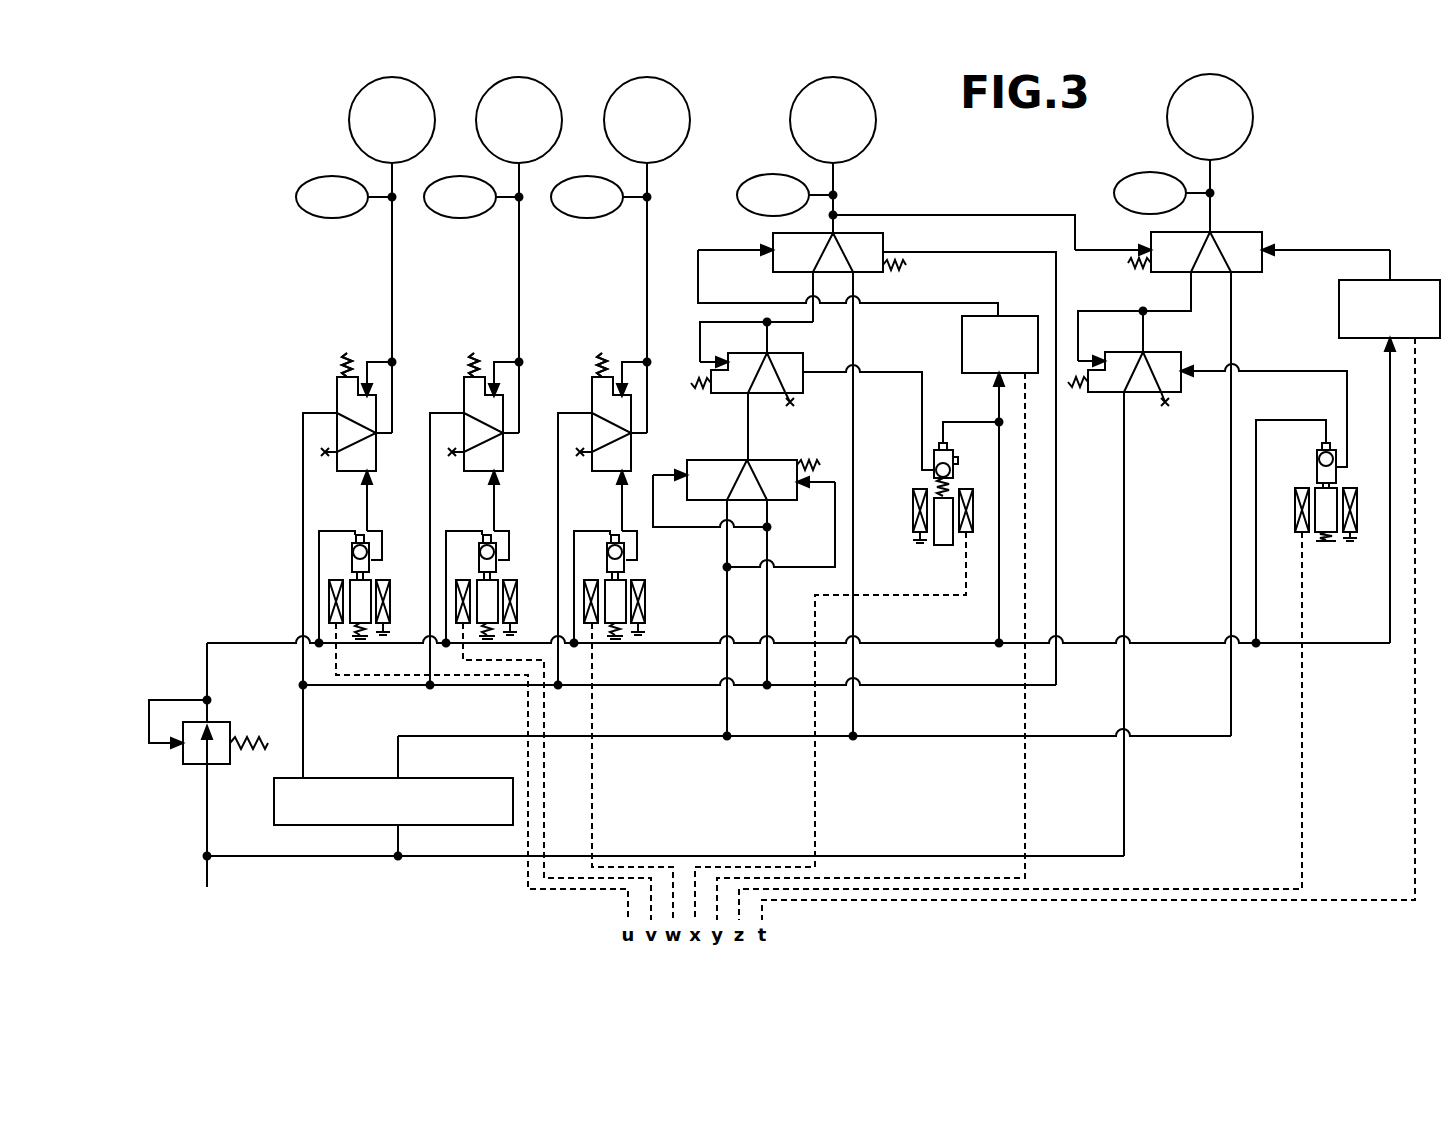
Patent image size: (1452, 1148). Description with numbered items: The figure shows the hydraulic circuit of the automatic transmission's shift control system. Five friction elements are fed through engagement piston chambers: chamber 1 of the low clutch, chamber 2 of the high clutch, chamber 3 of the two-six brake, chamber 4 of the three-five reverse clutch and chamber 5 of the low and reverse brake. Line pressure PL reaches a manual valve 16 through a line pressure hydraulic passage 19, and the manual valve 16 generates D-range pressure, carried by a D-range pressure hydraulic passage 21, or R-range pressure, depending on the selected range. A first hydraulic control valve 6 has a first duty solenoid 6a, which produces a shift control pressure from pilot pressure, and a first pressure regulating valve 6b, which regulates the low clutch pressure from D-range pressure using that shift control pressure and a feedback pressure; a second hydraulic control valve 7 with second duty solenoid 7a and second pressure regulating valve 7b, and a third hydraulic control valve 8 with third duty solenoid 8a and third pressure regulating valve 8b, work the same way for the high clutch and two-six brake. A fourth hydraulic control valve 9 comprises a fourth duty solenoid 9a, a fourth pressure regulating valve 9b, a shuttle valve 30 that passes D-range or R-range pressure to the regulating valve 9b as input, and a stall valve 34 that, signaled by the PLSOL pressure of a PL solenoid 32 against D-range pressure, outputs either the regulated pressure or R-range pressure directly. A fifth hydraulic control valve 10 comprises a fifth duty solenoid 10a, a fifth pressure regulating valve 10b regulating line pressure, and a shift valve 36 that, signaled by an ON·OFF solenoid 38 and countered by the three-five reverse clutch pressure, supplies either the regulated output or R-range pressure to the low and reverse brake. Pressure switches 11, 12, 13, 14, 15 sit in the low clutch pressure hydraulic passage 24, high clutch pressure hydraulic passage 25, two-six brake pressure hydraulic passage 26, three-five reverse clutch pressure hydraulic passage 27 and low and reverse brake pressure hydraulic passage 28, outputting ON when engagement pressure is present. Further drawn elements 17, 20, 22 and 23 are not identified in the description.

The engagement piston chamber 1 is at (435, 97).
The engagement piston chamber 2 is at (562, 97).
The engagement piston chamber 3 is at (690, 98).
The engagement piston chamber 4 is at (876, 113).
The engagement piston chamber 5 is at (1253, 110).
The first hydraulic control valve 6 is at (340, 350).
The first duty solenoid 6a is at (352, 530).
The first pressure regulating valve 6b is at (324, 395).
The second hydraulic control valve 7 is at (457, 480).
The second duty solenoid 7a is at (546, 695).
The second pressure regulating valve 7b is at (436, 364).
The third hydraulic control valve 8 is at (585, 480).
The third duty solenoid 8a is at (621, 695).
The third pressure regulating valve 8b is at (564, 364).
The fourth hydraulic control valve 9 is at (735, 233).
The fourth duty solenoid 9a is at (917, 483).
The fourth pressure regulating valve 9b is at (717, 400).
The fifth hydraulic control valve 10 is at (1115, 233).
The fifth duty solenoid 10a is at (1307, 482).
The fifth pressure regulating valve 10b is at (1112, 400).
The first pressure switch 11 is at (330, 172).
The second pressure switch 12 is at (458, 172).
The third pressure switch 13 is at (585, 172).
The fourth pressure switch 14 is at (765, 172).
The fifth pressure switch 15 is at (1142, 172).
The manual valve 16 is at (428, 826).
The pilot valve 17 is at (192, 770).
The line pressure hydraulic passage 19 is at (285, 858).
The pilot pressure oil passage 20 is at (264, 650).
The D-range pressure hydraulic passage 21 is at (437, 690).
The R pressure oil passage 22 is at (630, 740).
The line pressure oil passage 23 is at (1123, 803).
The low clutch pressure hydraulic passage 24 is at (392, 249).
The high clutch pressure hydraulic passage 25 is at (519, 249).
The 2-6 brake pressure hydraulic passage 26 is at (647, 249).
The 3-5 reverse clutch pressure hydraulic passage 27 is at (836, 178).
The low and reverse brake pressure hydraulic passage 28 is at (1213, 208).
The shuttle valve 30 is at (782, 453).
The PL solenoid 32 is at (960, 336).
The stall valve 34 is at (885, 238).
The shift valve 36 is at (1265, 237).
The ON·OFF solenoid 38 is at (1415, 280).